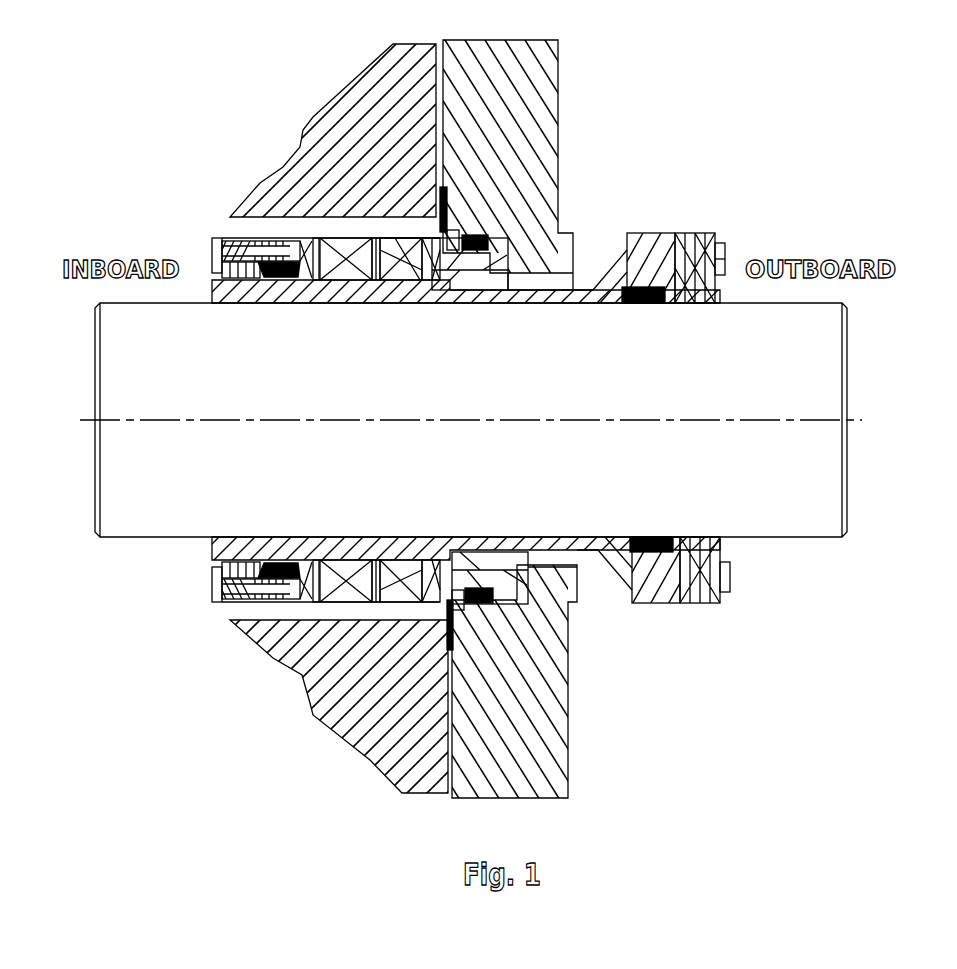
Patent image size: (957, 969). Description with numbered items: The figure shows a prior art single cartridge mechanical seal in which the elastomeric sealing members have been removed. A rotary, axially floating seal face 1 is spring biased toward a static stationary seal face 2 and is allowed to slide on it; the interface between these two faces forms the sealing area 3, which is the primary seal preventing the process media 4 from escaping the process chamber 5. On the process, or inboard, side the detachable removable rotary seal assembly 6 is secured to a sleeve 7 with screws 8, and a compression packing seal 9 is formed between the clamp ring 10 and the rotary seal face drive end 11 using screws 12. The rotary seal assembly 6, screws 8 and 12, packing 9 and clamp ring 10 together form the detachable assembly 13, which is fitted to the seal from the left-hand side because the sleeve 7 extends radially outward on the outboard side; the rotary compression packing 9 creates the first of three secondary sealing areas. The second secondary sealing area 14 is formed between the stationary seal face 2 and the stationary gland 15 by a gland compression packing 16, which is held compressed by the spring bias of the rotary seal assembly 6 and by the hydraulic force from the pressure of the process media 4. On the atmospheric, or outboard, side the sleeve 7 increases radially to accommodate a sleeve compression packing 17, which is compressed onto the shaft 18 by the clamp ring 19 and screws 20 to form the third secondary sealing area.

The rotary seal face 1 is at (412, 262).
The stationary seal face 2 is at (453, 600).
The sealing area 3 is at (450, 290).
The process media 4 is at (405, 235).
The process chamber 5 is at (347, 255).
The rotary seal assembly 6 is at (366, 283).
The sleeve 7 is at (582, 296).
The screws 8 is at (238, 245).
The compression packing seal 9 is at (265, 277).
The clamp ring 10 is at (222, 282).
The rotary seal face drive end 11 is at (315, 280).
The screws 12 is at (212, 247).
The detachable assembly 13 is at (330, 560).
The second secondary sealing area 14 is at (493, 588).
The stationary gland 15 is at (527, 165).
The gland compression packing 16 is at (492, 272).
The sleeve compression packing 17 is at (652, 303).
The shaft 18 is at (808, 382).
The clamp ring 19 is at (715, 303).
The screws 20 is at (720, 243).